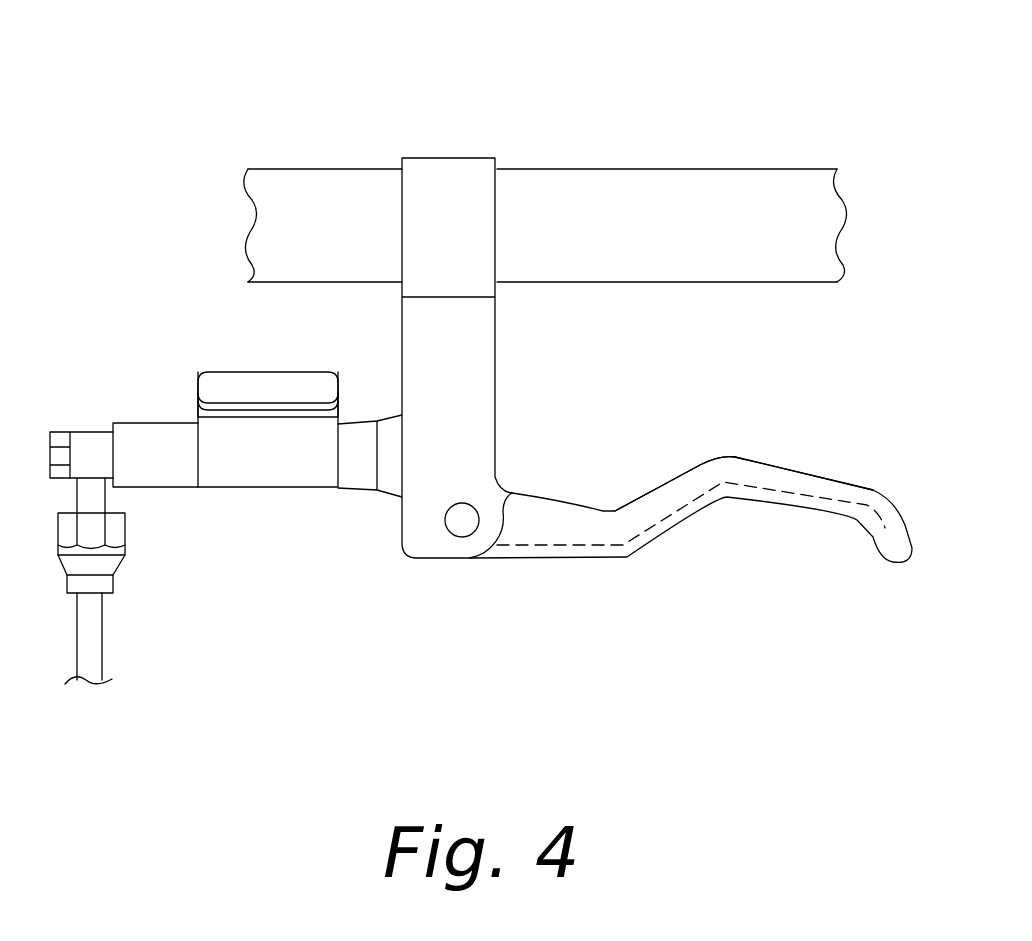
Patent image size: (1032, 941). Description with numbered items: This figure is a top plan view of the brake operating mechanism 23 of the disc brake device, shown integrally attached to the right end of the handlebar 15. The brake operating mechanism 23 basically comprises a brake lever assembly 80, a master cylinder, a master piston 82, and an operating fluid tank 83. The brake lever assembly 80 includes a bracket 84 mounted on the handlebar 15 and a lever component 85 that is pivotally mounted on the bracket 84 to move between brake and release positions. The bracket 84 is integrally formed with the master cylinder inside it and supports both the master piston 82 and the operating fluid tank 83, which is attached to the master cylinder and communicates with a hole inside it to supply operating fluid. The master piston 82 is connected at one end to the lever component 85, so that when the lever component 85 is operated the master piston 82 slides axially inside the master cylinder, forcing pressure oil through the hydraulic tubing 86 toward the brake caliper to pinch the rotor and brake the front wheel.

The handlebar 15 is at (728, 170).
The brake operating mechanism 23 is at (594, 110).
The brake lever assembly 80 is at (675, 553).
The master piston 82 is at (168, 487).
The operating fluid tank 83 is at (197, 382).
The bracket 84 is at (495, 362).
The lever component 85 is at (695, 462).
The hydraulic tubing 86 is at (102, 657).